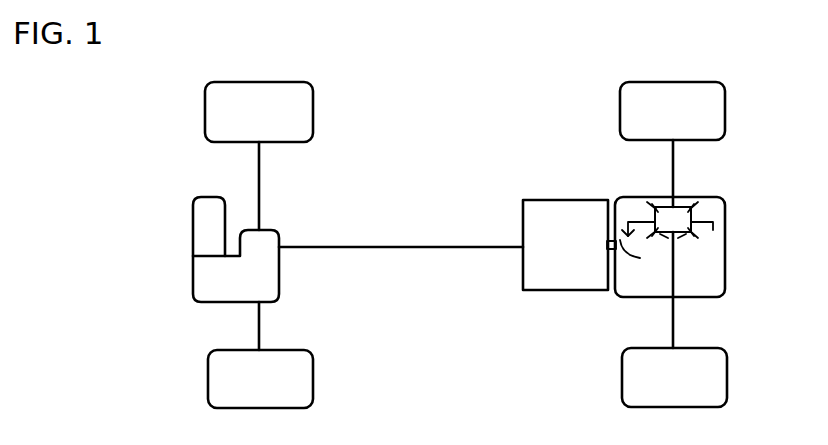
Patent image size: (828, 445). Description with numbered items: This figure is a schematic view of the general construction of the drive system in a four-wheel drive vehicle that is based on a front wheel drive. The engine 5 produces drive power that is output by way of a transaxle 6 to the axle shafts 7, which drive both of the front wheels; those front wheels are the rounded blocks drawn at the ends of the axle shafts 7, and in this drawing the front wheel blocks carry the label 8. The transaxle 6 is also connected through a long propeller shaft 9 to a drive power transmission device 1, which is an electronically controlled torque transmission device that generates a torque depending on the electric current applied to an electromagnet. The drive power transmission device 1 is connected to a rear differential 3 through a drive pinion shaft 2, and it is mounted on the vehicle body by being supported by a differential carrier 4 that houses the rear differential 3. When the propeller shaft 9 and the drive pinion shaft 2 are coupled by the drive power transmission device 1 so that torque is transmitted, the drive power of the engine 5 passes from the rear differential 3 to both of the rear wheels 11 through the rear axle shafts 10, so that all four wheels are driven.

The drive power transmission device 1 is at (577, 199).
The drive pinion shaft 2 is at (629, 250).
The rear differential 3 is at (679, 234).
The differential carrier 4 is at (632, 197).
The engine 5 is at (193, 232).
The transaxle 6 is at (193, 277).
The axle shafts 7 is at (261, 190).
The wheel 8 is at (305, 112).
The propeller shaft 9 is at (405, 246).
The axle shafts 10 is at (675, 163).
The rear wheels 11 is at (722, 110).